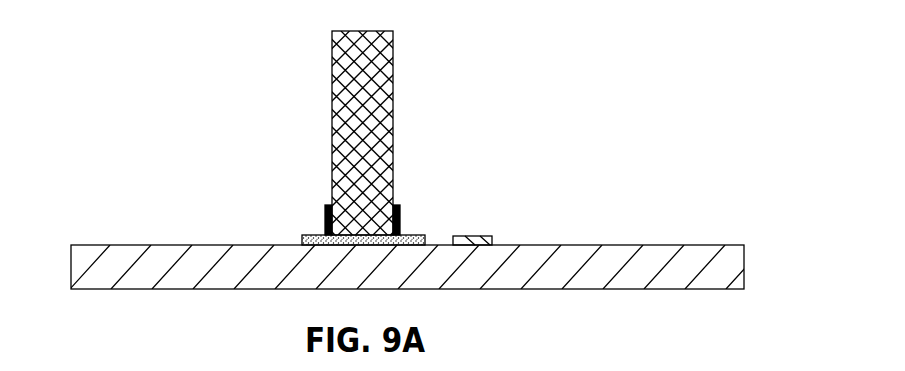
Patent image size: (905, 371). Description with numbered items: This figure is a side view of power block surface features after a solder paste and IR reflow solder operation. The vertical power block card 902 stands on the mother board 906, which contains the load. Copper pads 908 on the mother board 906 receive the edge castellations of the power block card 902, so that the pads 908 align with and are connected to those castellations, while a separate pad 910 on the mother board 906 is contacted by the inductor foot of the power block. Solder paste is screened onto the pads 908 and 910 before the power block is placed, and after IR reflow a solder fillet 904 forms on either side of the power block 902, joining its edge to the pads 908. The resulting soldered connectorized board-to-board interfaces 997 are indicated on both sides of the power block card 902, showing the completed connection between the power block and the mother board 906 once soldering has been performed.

The power block card 902 is at (393, 50).
The solder fillet 904 is at (405, 230).
The mother board 906 is at (128, 245).
The copper pads 908 is at (302, 241).
The pad 910 is at (492, 237).
The soldered connectorized board-to-board interfaces 997 is at (297, 150).